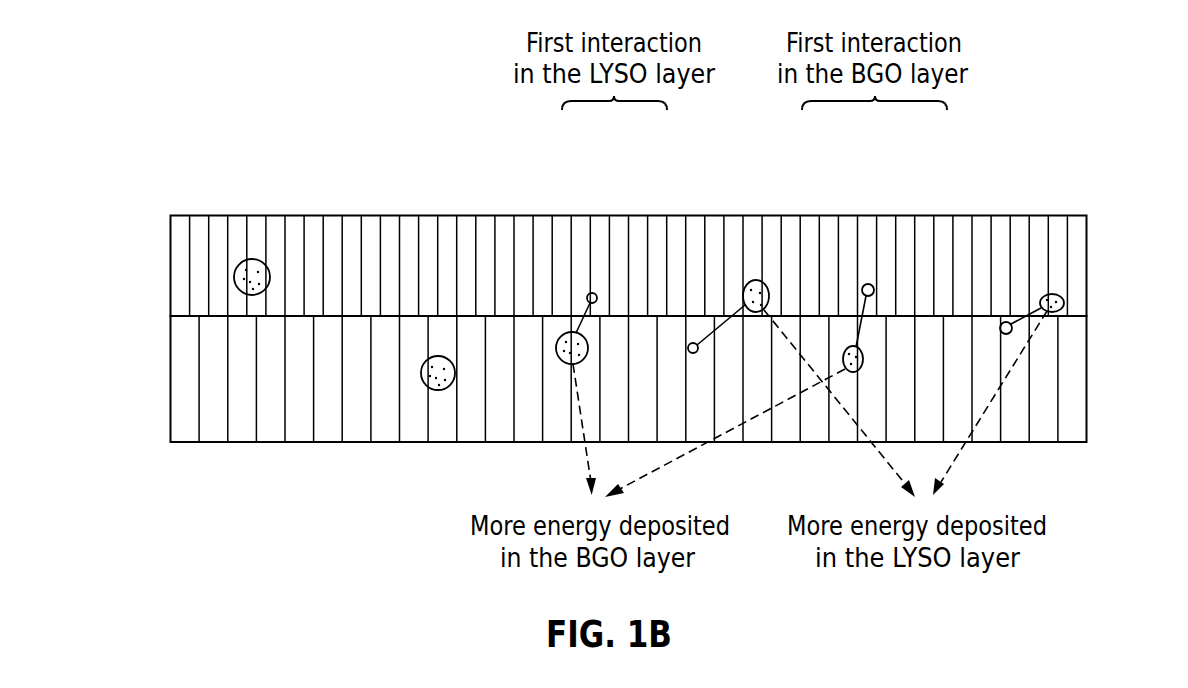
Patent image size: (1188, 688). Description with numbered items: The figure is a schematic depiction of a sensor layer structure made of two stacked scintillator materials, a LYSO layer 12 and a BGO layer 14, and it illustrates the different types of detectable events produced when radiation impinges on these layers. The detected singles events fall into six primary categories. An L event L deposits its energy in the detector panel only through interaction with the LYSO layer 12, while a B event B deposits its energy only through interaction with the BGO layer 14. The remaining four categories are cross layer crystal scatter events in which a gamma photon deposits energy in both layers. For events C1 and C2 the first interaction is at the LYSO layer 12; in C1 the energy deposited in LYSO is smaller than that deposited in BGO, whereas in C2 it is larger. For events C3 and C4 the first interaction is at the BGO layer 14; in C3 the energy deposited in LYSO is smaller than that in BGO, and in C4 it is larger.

The LYSO layer 12 is at (1087, 280).
The BGO layer 14 is at (1087, 357).
The LYSO event L is at (261, 261).
The BGO event B is at (435, 356).
The cross layer crystal scatter event C1 is at (590, 292).
The cross layer crystal scatter event C2 is at (748, 284).
The cross layer crystal scatter event C3 is at (851, 346).
The cross layer crystal scatter event C4 is at (1004, 322).